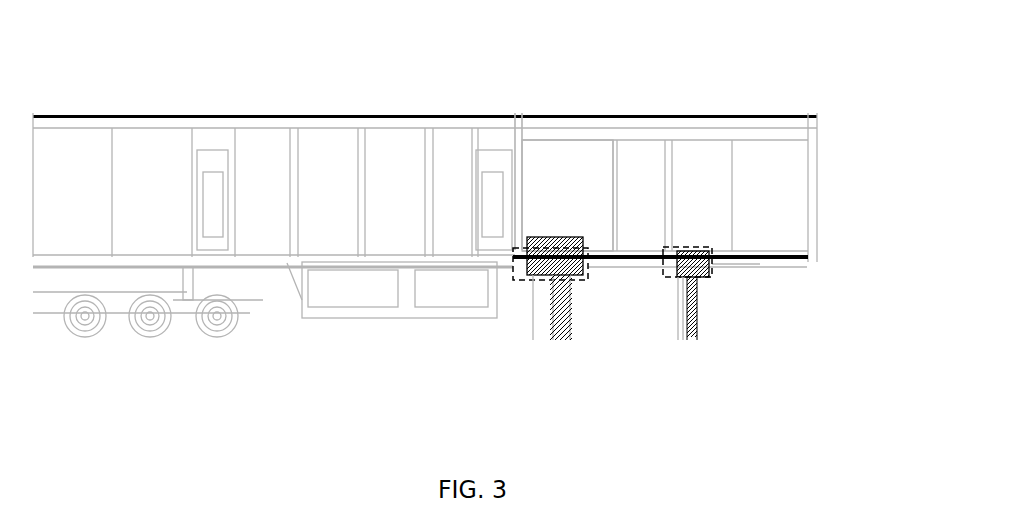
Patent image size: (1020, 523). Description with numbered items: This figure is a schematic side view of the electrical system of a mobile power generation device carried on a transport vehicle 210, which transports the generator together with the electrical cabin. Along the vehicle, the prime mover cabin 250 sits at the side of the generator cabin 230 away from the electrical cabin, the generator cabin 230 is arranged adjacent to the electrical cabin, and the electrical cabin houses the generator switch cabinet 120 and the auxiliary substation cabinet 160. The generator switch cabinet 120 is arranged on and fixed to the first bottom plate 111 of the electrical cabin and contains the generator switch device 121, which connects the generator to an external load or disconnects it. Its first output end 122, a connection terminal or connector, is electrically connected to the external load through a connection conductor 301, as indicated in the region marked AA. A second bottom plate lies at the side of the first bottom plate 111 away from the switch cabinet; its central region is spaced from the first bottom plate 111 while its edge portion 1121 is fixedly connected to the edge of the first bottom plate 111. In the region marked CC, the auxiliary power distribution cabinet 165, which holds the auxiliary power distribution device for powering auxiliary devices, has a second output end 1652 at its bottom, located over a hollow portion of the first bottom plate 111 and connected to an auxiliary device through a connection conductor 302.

The prime mover cabin 250 is at (142, 172).
The generator cabin 230 is at (328, 172).
The generator switch cabinet 120 is at (533, 172).
The auxiliary substation cabinet 160 is at (762, 173).
The transport vehicle 210 is at (288, 262).
The first bottom plate 111 is at (788, 257).
The edge portion 1121 is at (808, 263).
The detail region AA is at (517, 248).
The generator switch device 121 is at (570, 207).
The first output end 122 is at (532, 255).
The connection conductor 301 is at (568, 317).
The detail region CC is at (666, 250).
The auxiliary power distribution cabinet 165 is at (695, 232).
The connection conductor 302 is at (687, 318).
The second output end 1652 is at (680, 252).